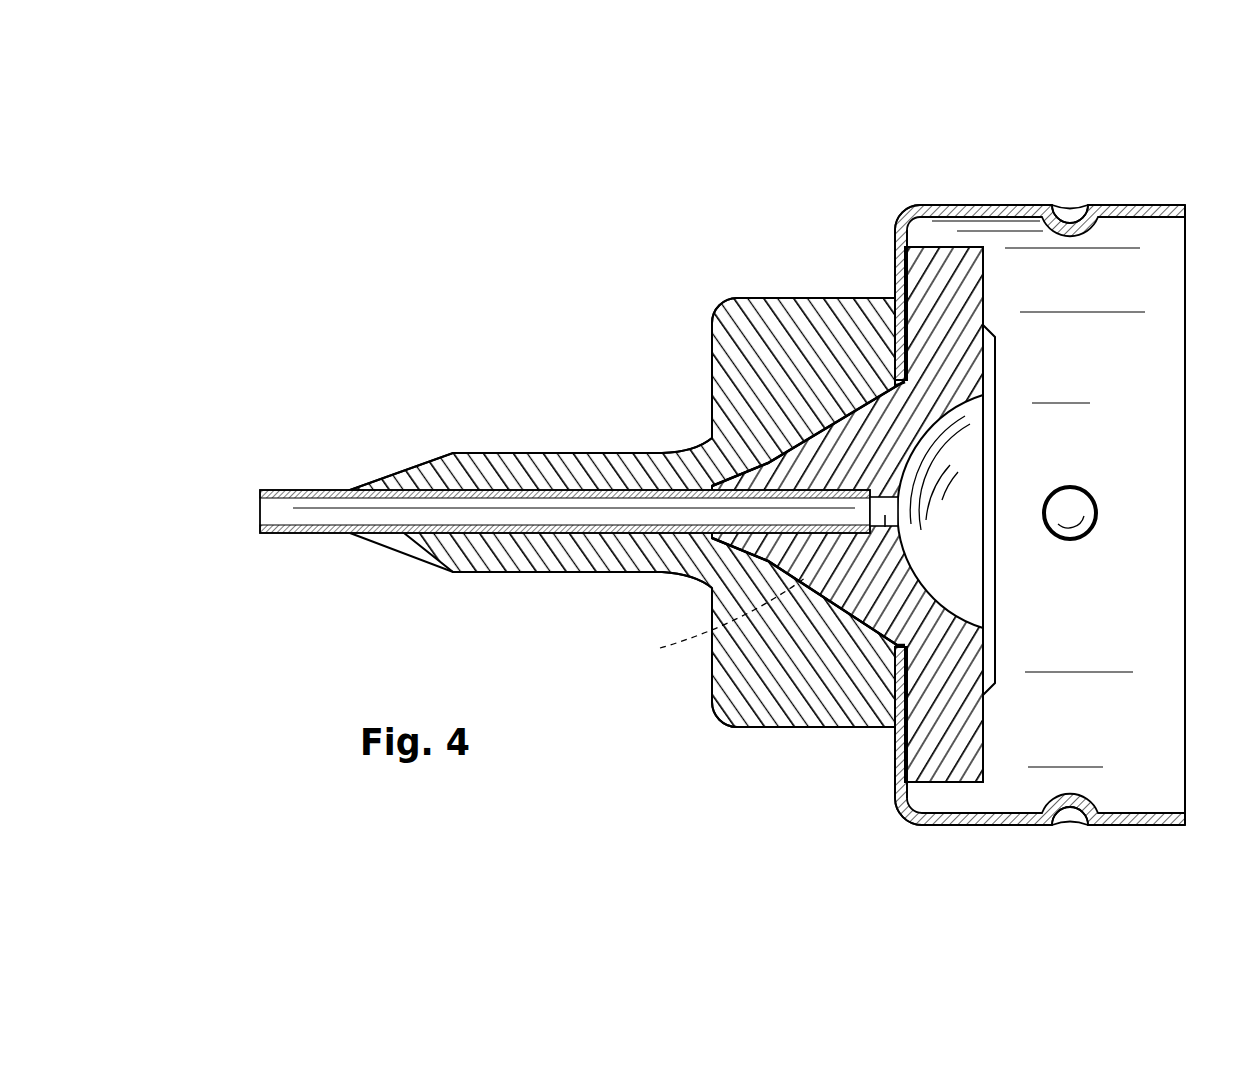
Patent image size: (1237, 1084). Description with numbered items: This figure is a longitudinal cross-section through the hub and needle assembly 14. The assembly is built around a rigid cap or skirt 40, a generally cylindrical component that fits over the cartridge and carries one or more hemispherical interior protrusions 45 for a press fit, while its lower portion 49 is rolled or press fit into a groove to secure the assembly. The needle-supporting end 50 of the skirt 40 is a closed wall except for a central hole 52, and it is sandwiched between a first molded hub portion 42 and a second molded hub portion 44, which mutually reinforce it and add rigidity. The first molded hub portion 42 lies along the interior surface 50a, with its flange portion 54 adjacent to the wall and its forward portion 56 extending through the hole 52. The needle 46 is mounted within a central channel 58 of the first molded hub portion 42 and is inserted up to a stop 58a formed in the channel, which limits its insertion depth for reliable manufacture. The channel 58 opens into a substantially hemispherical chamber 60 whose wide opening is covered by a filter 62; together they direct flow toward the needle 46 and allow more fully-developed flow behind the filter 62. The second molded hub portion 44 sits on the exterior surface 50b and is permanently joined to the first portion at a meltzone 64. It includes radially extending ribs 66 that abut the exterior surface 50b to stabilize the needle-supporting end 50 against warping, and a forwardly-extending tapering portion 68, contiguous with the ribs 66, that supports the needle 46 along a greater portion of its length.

The hub and needle assembly 14 is at (1019, 178).
The skirt 40 is at (1117, 827).
The first molded hub portion 42 is at (897, 762).
The second molded hub portion 44 is at (712, 689).
The hemispherical interior protrusions 45 is at (1072, 232).
The needle 46 is at (262, 490).
The lower portion of the skirt 49 is at (1183, 206).
The needle-supporting end of the skirt 50 is at (893, 283).
The interior surface of the needle-supporting end 50a is at (922, 730).
The exterior surface of the needle-supporting end 50b is at (893, 268).
The central hole 52 is at (888, 388).
The flange portion 54 is at (937, 317).
The forward portion 56 is at (785, 450).
The central channel 58 is at (712, 586).
The stop 58a is at (885, 517).
The chamber 60 is at (962, 530).
The filter 62 is at (986, 574).
The meltzone 64 is at (713, 618).
The radially extending ribs 66 is at (722, 326).
The forwardly-extending tapering portion 68 is at (455, 472).